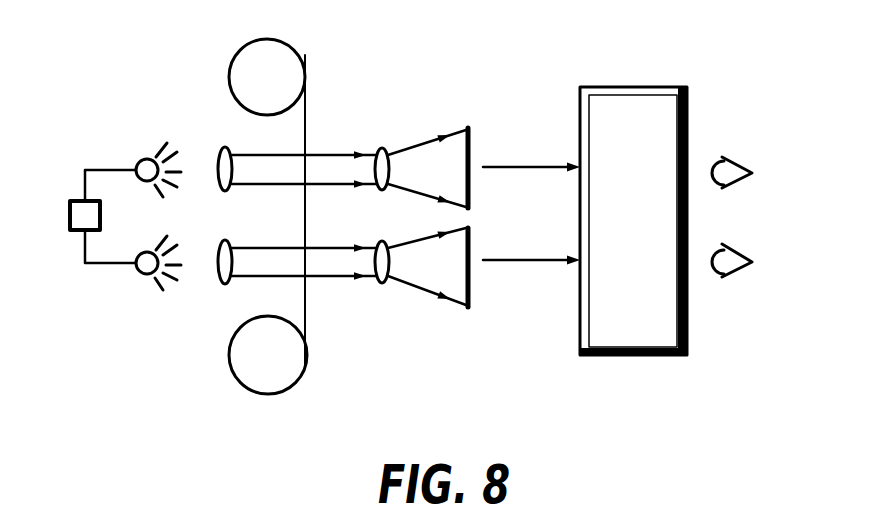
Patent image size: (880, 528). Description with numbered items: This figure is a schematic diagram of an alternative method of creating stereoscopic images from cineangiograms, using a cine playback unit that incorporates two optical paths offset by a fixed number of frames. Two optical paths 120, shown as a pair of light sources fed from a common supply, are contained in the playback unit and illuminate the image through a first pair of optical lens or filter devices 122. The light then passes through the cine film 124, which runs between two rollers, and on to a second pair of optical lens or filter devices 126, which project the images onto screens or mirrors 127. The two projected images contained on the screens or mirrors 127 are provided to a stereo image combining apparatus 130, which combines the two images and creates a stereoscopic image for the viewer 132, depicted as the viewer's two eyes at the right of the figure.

The optical paths 120 is at (140, 160).
The optical lens or filter devices 122 is at (218, 188).
The cine film 124 is at (304, 63).
The optical lens or filter devices 126 is at (378, 192).
The screens or mirrors 127 is at (470, 145).
The stereo image combining apparatus 130 is at (652, 87).
The viewer 132 is at (731, 186).